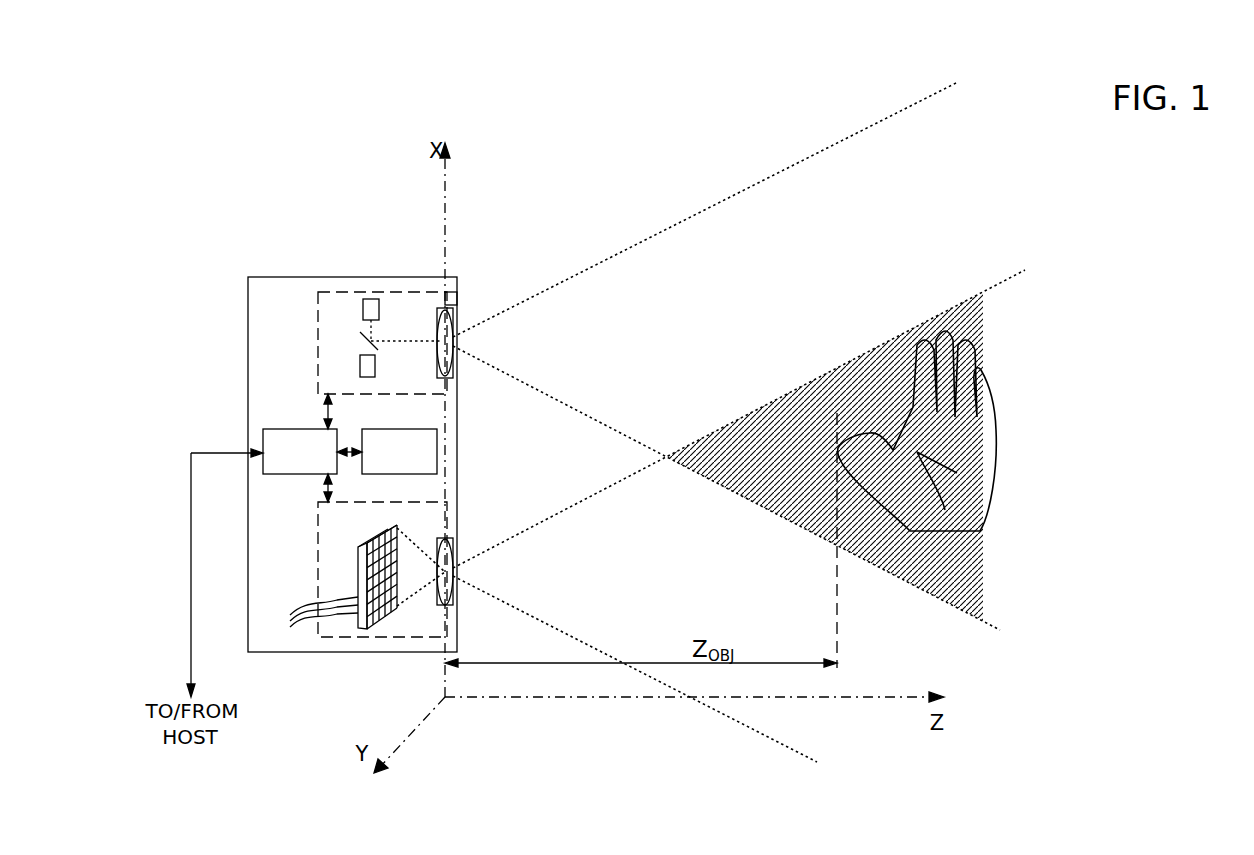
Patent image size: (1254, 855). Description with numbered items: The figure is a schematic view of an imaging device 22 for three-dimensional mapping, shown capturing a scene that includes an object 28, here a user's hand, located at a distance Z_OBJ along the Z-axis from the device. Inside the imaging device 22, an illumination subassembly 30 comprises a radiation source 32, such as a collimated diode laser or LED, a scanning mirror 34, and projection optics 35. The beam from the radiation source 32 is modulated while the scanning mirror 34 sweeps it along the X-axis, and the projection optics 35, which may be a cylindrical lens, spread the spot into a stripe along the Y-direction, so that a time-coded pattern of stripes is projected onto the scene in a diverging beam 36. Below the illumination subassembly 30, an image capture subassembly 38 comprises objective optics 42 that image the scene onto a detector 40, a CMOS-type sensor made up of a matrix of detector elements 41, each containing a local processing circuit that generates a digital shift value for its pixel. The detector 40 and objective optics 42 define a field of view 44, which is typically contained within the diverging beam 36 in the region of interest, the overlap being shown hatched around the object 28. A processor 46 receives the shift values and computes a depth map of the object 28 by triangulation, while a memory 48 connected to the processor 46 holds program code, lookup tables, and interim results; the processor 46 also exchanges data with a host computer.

The imaging device 22 is at (248, 341).
The object 28 is at (999, 373).
The illumination subassembly 30 is at (318, 324).
The radiation source 32 is at (372, 297).
The scanning mirror 34 is at (360, 373).
The projection optics 35 is at (453, 341).
The diverging beam 36 is at (706, 207).
The image capture subassembly 38 is at (318, 568).
The detector 40 is at (358, 548).
The detector elements 41 is at (309, 617).
The objective optics 42 is at (453, 571).
The field of view 44 is at (586, 497).
The processor 46 is at (248, 436).
The memory 48 is at (437, 457).